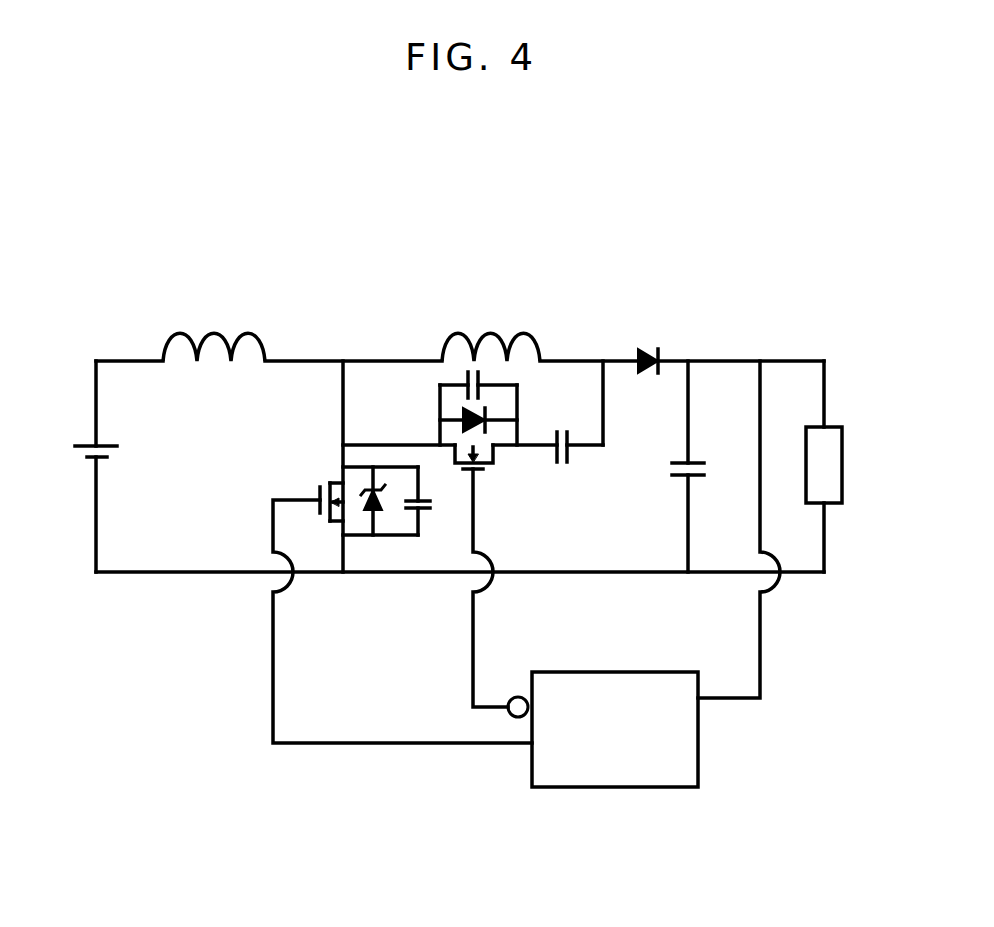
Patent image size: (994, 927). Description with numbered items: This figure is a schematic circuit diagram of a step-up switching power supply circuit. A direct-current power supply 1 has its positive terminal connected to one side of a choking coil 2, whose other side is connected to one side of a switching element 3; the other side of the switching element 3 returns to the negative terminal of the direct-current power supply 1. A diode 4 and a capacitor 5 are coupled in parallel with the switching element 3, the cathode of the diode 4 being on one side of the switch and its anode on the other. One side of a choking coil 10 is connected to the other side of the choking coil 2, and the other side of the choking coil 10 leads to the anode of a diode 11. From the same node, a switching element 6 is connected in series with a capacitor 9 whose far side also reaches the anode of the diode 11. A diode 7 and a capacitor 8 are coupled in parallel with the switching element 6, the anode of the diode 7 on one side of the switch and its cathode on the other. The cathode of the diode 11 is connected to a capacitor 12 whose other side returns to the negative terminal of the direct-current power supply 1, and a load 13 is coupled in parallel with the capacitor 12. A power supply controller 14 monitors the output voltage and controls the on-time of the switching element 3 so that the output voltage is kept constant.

The direct-current power supply 1 is at (82, 442).
The choking coil 2 is at (213, 328).
The switching element 3 is at (325, 483).
The diode 4 is at (366, 526).
The capacitor 5 is at (413, 526).
The switching element 6 is at (493, 472).
The diode 7 is at (490, 417).
The capacitor 8 is at (485, 378).
The capacitor 9 is at (573, 463).
The choking coil 10 is at (488, 330).
The diode 11 is at (648, 348).
The capacitor 12 is at (697, 450).
The load 13 is at (831, 428).
The power supply controller 14 is at (597, 672).